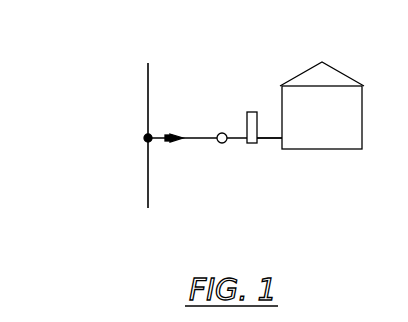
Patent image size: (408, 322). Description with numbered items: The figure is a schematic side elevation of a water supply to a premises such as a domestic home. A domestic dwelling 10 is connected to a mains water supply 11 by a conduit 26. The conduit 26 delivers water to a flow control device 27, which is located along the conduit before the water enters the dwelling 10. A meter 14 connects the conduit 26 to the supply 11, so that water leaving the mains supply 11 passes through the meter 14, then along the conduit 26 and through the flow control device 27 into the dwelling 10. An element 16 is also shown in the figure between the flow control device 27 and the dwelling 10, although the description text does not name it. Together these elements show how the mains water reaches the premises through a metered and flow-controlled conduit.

The domestic dwelling 10 is at (333, 132).
The mains water supply 11 is at (148, 192).
The meter 14 is at (218, 143).
The connection line 16 is at (267, 143).
The conduit 26 is at (193, 138).
The flow control device 27 is at (252, 112).